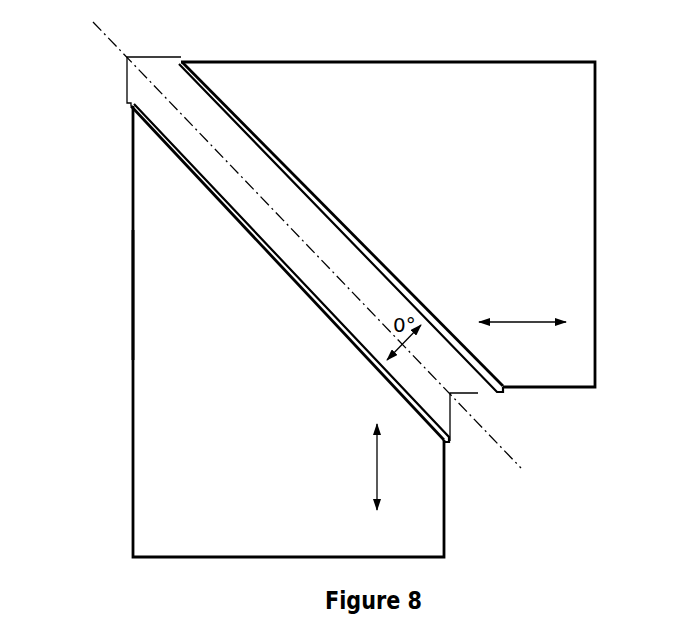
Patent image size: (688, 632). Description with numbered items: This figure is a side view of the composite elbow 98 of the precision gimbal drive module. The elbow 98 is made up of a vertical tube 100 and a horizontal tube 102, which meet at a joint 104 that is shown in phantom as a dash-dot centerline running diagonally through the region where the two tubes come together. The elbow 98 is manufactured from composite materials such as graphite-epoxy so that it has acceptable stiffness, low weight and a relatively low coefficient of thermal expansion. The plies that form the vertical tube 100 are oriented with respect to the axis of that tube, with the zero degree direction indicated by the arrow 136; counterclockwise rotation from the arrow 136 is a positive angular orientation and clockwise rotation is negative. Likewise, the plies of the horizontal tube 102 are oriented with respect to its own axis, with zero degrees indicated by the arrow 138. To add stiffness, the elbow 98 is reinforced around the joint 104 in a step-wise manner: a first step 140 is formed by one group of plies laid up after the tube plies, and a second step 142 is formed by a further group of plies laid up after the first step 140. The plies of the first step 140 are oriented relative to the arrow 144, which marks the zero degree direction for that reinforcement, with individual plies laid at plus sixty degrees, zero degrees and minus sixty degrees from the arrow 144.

The elbow 98 is at (130, 297).
The vertical tube 100 is at (152, 415).
The horizontal tube 102 is at (473, 82).
The joint 104 is at (155, 83).
The arrow 136 is at (377, 475).
The arrow 138 is at (525, 323).
The first step 140 is at (175, 158).
The second step 142 is at (155, 110).
The arrow 144 is at (405, 347).